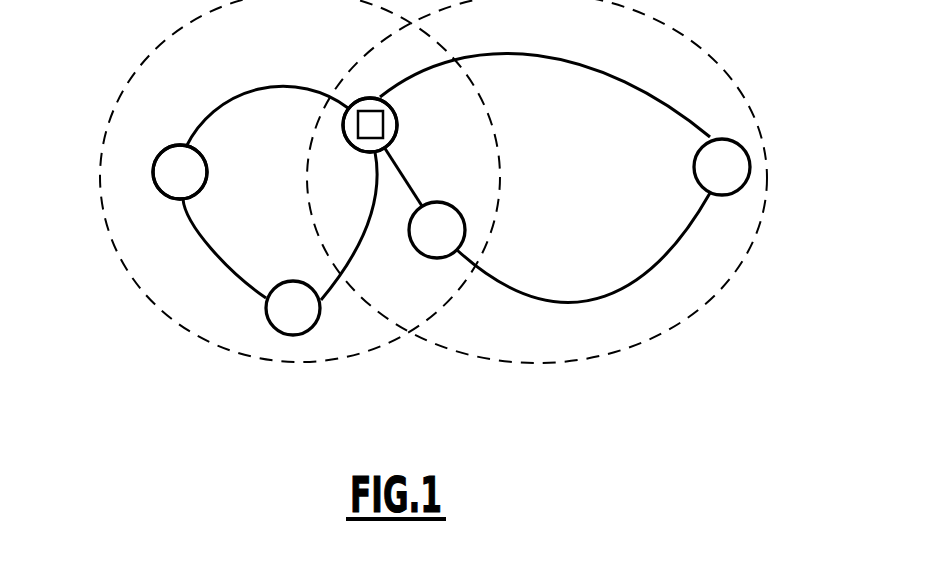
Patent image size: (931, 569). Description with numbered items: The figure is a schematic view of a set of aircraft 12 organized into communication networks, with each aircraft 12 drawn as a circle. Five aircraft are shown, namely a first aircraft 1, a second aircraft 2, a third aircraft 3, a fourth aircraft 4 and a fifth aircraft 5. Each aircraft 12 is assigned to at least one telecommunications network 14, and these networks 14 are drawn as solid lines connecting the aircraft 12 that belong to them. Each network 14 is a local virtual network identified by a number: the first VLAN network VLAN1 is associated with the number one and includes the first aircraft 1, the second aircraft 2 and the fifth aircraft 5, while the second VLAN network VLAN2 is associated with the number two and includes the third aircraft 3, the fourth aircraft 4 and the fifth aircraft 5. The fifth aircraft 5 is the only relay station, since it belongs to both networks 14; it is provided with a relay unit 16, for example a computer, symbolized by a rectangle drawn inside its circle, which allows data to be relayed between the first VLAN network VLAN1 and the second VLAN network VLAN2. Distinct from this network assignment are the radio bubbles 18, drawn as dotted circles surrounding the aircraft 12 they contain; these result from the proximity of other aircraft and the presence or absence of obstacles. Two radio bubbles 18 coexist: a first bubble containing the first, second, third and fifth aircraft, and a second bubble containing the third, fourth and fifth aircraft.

The first aircraft 1 is at (163, 200).
The second aircraft 2 is at (272, 327).
The third aircraft 3 is at (463, 213).
The fourth aircraft 4 is at (693, 165).
The fifth aircraft 5 is at (352, 148).
The aircraft 12 is at (168, 163).
The telecommunications network 14 is at (235, 95).
The relay unit 16 is at (383, 129).
The radio bubble 18 is at (150, 270).
The first VLAN network VLAN1 is at (198, 124).
The second VLAN network VLAN2 is at (665, 263).